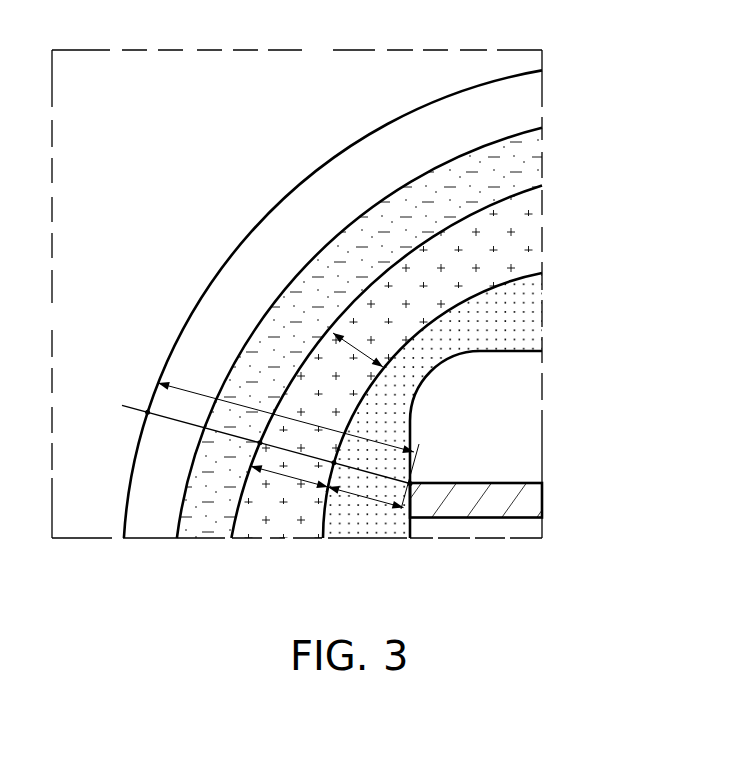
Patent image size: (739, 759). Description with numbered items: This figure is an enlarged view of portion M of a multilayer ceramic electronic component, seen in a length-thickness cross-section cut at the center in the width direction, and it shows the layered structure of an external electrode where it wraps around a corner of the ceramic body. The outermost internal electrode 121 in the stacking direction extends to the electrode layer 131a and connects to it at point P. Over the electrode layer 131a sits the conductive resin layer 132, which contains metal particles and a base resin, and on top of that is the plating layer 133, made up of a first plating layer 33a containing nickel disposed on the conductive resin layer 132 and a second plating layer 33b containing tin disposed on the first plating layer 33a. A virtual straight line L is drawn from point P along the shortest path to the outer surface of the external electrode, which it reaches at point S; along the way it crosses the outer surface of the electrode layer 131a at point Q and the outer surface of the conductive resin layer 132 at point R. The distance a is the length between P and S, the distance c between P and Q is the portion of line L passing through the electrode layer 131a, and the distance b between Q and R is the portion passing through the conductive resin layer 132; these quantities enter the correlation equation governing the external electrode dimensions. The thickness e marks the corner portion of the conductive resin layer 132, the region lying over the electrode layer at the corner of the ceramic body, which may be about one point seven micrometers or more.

The electrode layer 131a is at (503, 318).
The conductive resin layer 132 is at (398, 291).
The plating layer 133 is at (147, 215).
The first plating layer 33a is at (307, 302).
The second plating layer 33b is at (218, 330).
The internal electrode 121 is at (485, 483).
The virtual straight line L is at (134, 401).
The portion M is at (307, 584).
The point S is at (157, 405).
The point R is at (269, 432).
The point Q is at (343, 469).
The point P is at (416, 476).
The distance a is at (286, 417).
The distance b is at (289, 484).
The distance c is at (366, 502).
The thickness e is at (358, 347).